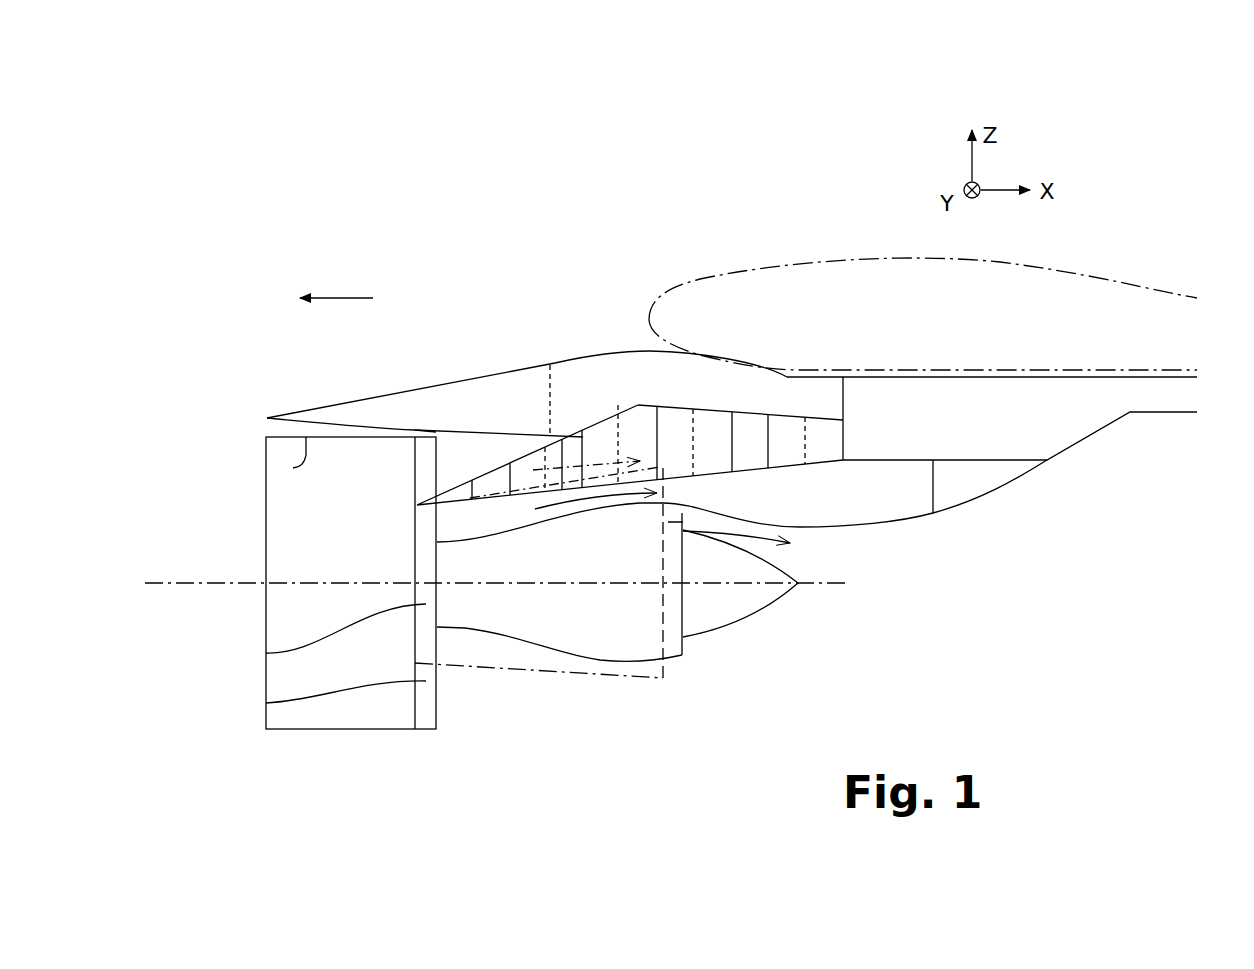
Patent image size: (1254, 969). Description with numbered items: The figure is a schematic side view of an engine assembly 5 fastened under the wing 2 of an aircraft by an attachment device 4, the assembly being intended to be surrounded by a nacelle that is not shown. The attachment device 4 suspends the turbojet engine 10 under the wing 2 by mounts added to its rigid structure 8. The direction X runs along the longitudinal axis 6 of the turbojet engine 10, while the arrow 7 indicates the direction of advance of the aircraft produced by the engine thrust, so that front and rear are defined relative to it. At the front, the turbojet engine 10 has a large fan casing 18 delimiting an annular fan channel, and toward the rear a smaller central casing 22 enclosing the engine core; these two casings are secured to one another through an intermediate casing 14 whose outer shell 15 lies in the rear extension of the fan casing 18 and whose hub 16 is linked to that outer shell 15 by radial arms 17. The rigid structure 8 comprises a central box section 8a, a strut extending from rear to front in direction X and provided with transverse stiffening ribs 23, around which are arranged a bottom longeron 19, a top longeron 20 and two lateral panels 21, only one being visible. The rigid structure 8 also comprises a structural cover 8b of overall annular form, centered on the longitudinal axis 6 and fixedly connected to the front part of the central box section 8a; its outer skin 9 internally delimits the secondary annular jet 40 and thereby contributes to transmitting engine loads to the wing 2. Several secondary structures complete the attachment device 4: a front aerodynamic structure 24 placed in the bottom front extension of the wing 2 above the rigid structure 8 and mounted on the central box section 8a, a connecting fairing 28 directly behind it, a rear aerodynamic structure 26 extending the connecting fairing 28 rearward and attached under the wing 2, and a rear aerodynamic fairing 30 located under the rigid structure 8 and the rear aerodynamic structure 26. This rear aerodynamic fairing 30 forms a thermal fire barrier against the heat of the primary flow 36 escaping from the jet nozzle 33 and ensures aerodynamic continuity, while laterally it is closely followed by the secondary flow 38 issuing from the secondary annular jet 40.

The wing 2 is at (1127, 315).
The attachment device 4 is at (643, 297).
The engine assembly 5 is at (228, 505).
The longitudinal axis 6 is at (180, 583).
The arrow 7 is at (350, 298).
The rigid structure 8 is at (790, 377).
The central box section 8a is at (793, 459).
The structural cover 8b is at (642, 680).
The outer skin 9 is at (548, 672).
The turbojet engine 10 is at (362, 740).
The intermediate casing 14 is at (425, 732).
The outer shell 15 is at (423, 436).
The hub 16 is at (266, 653).
The radial arms 17 is at (266, 703).
The fan casing 18 is at (293, 468).
The bottom longeron 19 is at (513, 505).
The top longeron 20 is at (507, 470).
The lateral panels 21 is at (678, 430).
The central casing 22 is at (468, 628).
The transverse stiffening ribs 23 is at (752, 430).
The front aerodynamic structure 24 is at (457, 378).
The rear aerodynamic structure 26 is at (935, 405).
The connecting fairing 28 is at (658, 380).
The rear aerodynamic fairing 30 is at (915, 510).
The jet nozzle 33 is at (683, 607).
The primary flow 36 is at (747, 543).
The secondary flow 38 is at (590, 452).
The secondary annular jet 40 is at (456, 530).